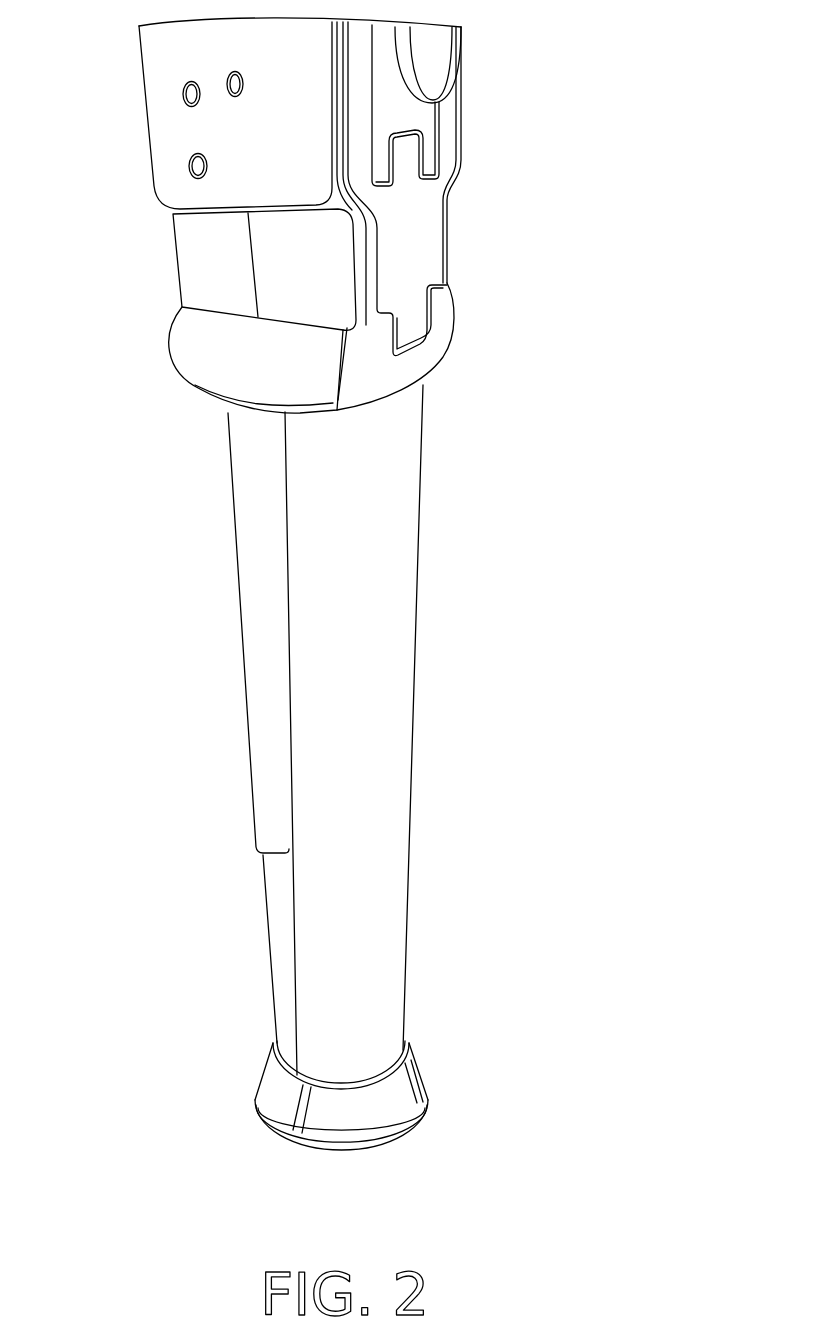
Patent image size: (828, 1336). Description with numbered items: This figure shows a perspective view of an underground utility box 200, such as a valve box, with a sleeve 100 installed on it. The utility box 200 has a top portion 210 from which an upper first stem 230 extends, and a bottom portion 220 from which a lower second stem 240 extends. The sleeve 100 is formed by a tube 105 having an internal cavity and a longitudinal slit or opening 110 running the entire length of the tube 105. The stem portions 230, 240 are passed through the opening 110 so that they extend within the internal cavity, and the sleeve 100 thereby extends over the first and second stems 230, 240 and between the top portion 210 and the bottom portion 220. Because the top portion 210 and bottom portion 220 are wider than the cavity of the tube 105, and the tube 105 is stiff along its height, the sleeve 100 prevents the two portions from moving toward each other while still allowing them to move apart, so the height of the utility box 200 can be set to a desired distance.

The sleeve 100 is at (373, 576).
The tube 105 is at (387, 687).
The longitudinal slit 110 is at (292, 887).
The underground utility box 200 is at (567, 193).
The top portion 210 is at (397, 1093).
The bottom portion 220 is at (180, 153).
The first stem 230 is at (283, 993).
The second stem 240 is at (273, 612).